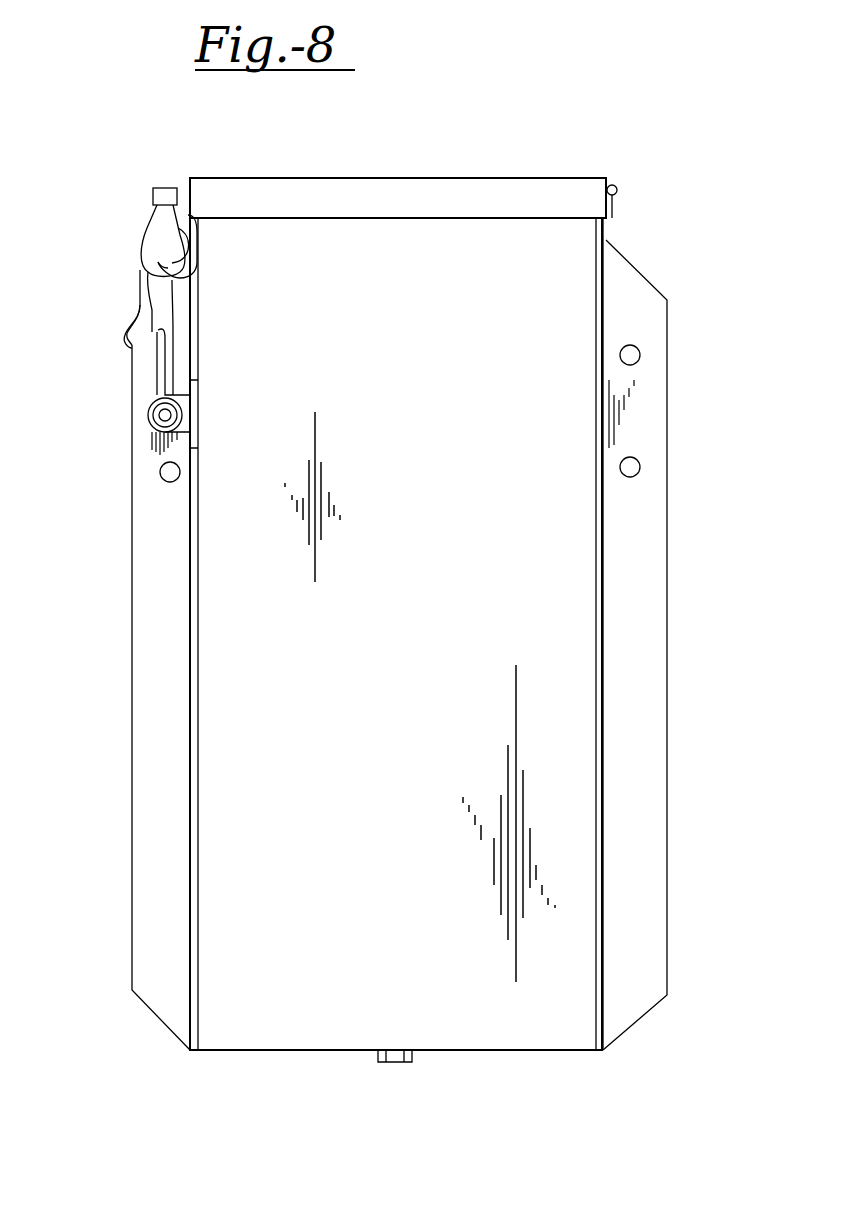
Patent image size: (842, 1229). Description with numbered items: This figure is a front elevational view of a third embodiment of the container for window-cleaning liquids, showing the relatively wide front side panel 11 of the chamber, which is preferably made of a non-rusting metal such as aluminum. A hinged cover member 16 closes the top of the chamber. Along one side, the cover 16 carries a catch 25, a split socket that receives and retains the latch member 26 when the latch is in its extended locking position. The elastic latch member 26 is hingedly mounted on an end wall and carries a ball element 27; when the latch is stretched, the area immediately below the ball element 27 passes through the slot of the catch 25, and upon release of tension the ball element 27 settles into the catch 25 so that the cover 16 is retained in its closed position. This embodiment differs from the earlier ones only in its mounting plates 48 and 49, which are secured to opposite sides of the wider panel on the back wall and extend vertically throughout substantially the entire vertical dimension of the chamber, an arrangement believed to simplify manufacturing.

The front side panel 11 is at (410, 588).
The hinged cover member 16 is at (455, 180).
The catch 25 is at (185, 272).
The latch member 26 is at (130, 340).
The ball element 27 is at (148, 234).
The mounting plate 48 is at (150, 708).
The mounting plate 49 is at (645, 604).